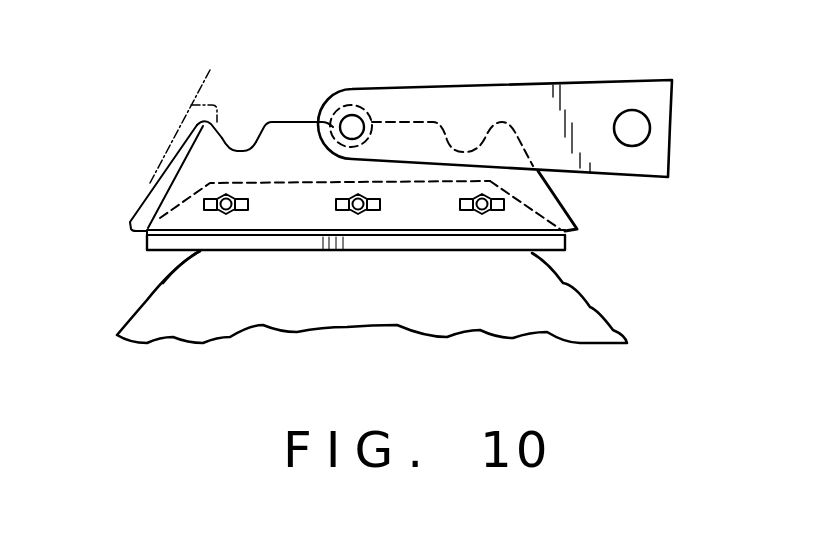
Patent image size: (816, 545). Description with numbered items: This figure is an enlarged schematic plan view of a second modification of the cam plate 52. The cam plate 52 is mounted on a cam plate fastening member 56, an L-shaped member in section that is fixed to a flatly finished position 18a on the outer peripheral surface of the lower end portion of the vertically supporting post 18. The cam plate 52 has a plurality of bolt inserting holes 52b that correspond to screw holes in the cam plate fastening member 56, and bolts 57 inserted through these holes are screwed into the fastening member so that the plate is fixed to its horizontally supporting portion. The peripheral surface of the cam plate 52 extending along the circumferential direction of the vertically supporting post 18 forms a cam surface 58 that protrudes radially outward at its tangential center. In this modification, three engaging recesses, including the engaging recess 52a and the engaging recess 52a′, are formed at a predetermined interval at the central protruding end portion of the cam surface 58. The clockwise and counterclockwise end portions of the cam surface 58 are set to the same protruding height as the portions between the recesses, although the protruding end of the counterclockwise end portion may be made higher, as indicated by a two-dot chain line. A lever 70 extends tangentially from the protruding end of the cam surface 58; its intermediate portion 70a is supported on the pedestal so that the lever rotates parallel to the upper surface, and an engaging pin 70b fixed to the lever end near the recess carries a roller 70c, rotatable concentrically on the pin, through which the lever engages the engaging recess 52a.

The vertically supporting post 18 is at (600, 305).
The flatly finished position 18a is at (227, 253).
The cam plate 52 is at (124, 224).
The engaging recess 52a is at (372, 148).
The engaging recess 52a′ is at (235, 149).
The bolt inserting holes 52b is at (336, 205).
The cam plate fastening member 56 is at (565, 243).
The bolts 57 is at (226, 212).
The cam surface 58 is at (176, 147).
The lever 70 is at (627, 81).
The intermediate portion of the lever 70a is at (650, 128).
The engaging pin 70b is at (364, 122).
The roller 70c is at (348, 104).